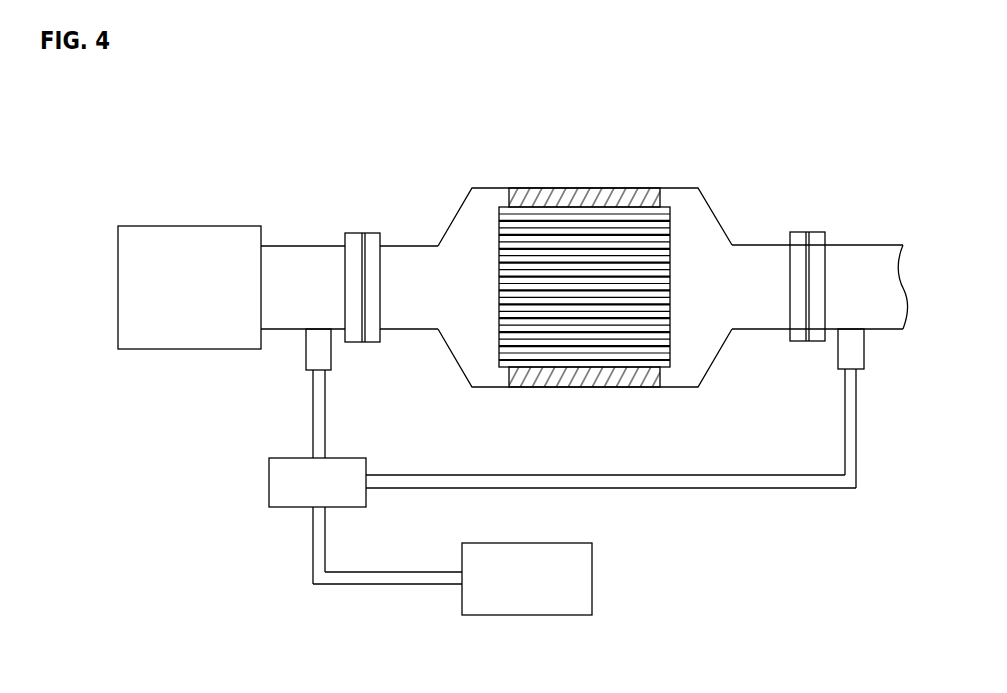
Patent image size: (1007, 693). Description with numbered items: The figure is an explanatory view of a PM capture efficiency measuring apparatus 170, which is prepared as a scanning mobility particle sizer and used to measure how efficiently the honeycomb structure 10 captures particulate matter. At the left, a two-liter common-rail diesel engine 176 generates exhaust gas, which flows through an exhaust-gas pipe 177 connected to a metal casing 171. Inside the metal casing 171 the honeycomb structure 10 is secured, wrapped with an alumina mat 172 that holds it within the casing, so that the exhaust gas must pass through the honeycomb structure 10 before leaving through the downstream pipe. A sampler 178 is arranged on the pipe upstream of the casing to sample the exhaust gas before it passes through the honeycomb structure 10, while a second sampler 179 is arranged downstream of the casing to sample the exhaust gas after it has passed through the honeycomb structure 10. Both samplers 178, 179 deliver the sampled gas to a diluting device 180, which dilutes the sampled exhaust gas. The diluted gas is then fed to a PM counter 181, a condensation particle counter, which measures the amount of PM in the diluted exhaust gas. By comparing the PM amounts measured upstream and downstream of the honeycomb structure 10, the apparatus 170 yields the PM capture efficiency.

The honeycomb structure 10 is at (682, 222).
The PM capture efficiency measuring apparatus 170 is at (600, 100).
The metal casing 171 is at (676, 388).
The alumina mat 172 is at (591, 197).
The common-rail diesel engine 176 is at (188, 242).
The exhaust-gas pipe 177 is at (298, 260).
The sampler 178 is at (306, 350).
The sampler 179 is at (864, 350).
The diluting device 180 is at (269, 482).
The PM counter 181 is at (592, 576).